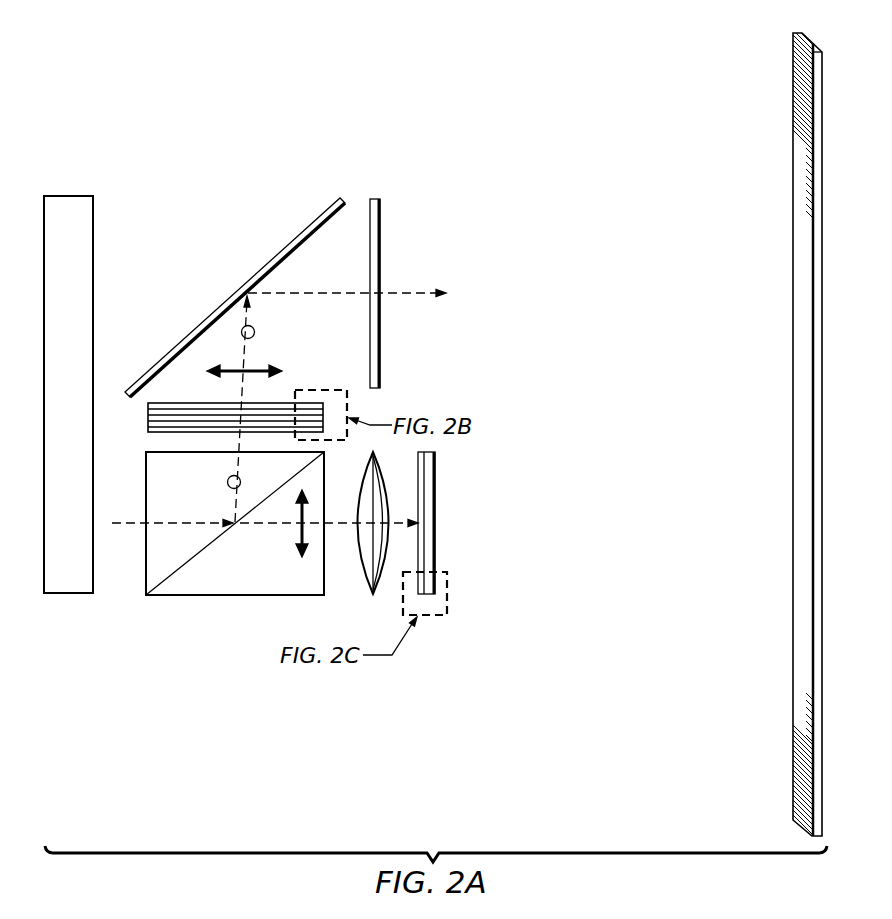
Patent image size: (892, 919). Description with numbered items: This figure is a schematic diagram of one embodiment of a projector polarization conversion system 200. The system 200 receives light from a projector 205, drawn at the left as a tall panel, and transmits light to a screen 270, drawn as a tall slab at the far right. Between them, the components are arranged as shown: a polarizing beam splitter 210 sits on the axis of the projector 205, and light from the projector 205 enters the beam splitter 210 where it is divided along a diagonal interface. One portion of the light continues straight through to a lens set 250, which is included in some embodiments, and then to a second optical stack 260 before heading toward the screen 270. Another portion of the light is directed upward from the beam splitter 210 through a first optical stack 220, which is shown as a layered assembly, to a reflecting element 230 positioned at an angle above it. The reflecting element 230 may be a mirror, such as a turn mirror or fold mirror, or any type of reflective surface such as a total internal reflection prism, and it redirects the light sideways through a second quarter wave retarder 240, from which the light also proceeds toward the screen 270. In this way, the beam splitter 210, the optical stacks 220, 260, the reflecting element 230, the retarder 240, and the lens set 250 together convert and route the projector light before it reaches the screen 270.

The projector polarization conversion system 200 is at (320, 57).
The projector 205 is at (72, 195).
The polarizing beam splitter 210 is at (227, 596).
The first optical stack 220 is at (282, 396).
The reflecting element 230 is at (273, 258).
The second quarter wave retarder 240 is at (380, 258).
The lens set 250 is at (365, 573).
The second optical stack 260 is at (434, 606).
The screen 270 is at (798, 526).